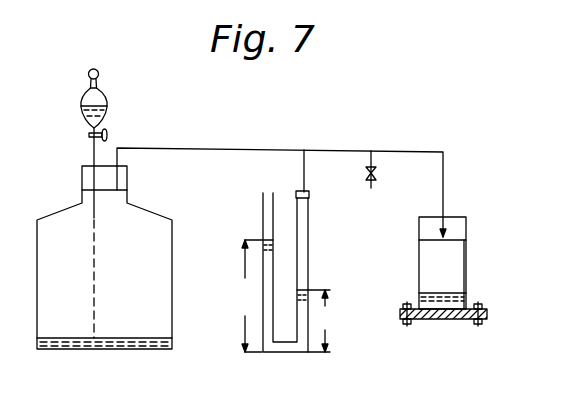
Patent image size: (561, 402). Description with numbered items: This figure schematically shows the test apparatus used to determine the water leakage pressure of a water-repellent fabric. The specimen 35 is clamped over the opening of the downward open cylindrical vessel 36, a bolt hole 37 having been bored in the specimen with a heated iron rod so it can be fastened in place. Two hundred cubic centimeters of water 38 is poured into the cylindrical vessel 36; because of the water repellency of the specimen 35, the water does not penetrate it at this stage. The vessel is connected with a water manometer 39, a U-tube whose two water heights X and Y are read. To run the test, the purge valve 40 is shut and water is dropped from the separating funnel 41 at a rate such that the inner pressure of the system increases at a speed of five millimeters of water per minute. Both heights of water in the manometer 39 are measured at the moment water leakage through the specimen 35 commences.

The specimen 35 is at (430, 319).
The cylindrical vessel 36 is at (467, 270).
The bolt hole 37 is at (400, 310).
The water 38 is at (430, 298).
The water manometer 39 is at (263, 326).
The purge valve 40 is at (376, 175).
The separating funnel 41 is at (108, 112).